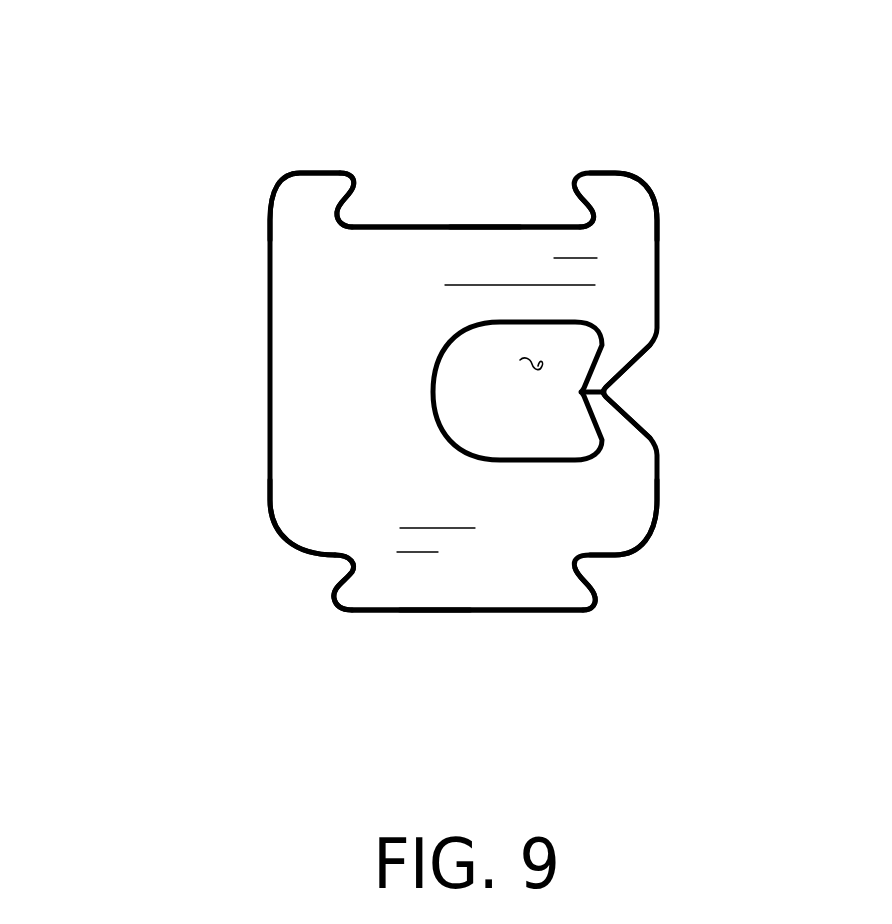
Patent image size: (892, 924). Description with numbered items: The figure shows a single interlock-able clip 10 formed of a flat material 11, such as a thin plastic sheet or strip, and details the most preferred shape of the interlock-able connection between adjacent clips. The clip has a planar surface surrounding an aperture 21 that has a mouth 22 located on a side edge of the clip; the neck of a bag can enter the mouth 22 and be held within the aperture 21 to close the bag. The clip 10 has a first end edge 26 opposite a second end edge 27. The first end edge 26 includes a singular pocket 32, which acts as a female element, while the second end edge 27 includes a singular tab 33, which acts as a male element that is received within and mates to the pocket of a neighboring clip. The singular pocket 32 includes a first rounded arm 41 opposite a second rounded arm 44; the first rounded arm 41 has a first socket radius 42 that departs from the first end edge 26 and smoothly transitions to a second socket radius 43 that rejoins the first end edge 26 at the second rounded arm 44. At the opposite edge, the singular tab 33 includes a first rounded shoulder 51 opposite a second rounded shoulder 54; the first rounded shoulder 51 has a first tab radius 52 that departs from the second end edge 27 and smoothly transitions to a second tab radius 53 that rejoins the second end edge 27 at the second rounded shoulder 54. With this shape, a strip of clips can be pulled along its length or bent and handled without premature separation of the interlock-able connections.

The clip 10 is at (207, 328).
The flat material 11 is at (342, 455).
The aperture 21 is at (535, 365).
The mouth 22 is at (604, 393).
The first end edge 26 is at (456, 222).
The second end edge 27 is at (524, 612).
The singular pocket 32 is at (486, 225).
The singular tab 33 is at (432, 583).
The first rounded arm 41 is at (590, 190).
The first socket radius 42 is at (575, 222).
The second socket radius 43 is at (338, 212).
The second rounded arm 44 is at (322, 160).
The first rounded shoulder 51 is at (579, 598).
The first tab radius 52 is at (585, 560).
The second tab radius 53 is at (348, 570).
The second rounded shoulder 54 is at (347, 598).